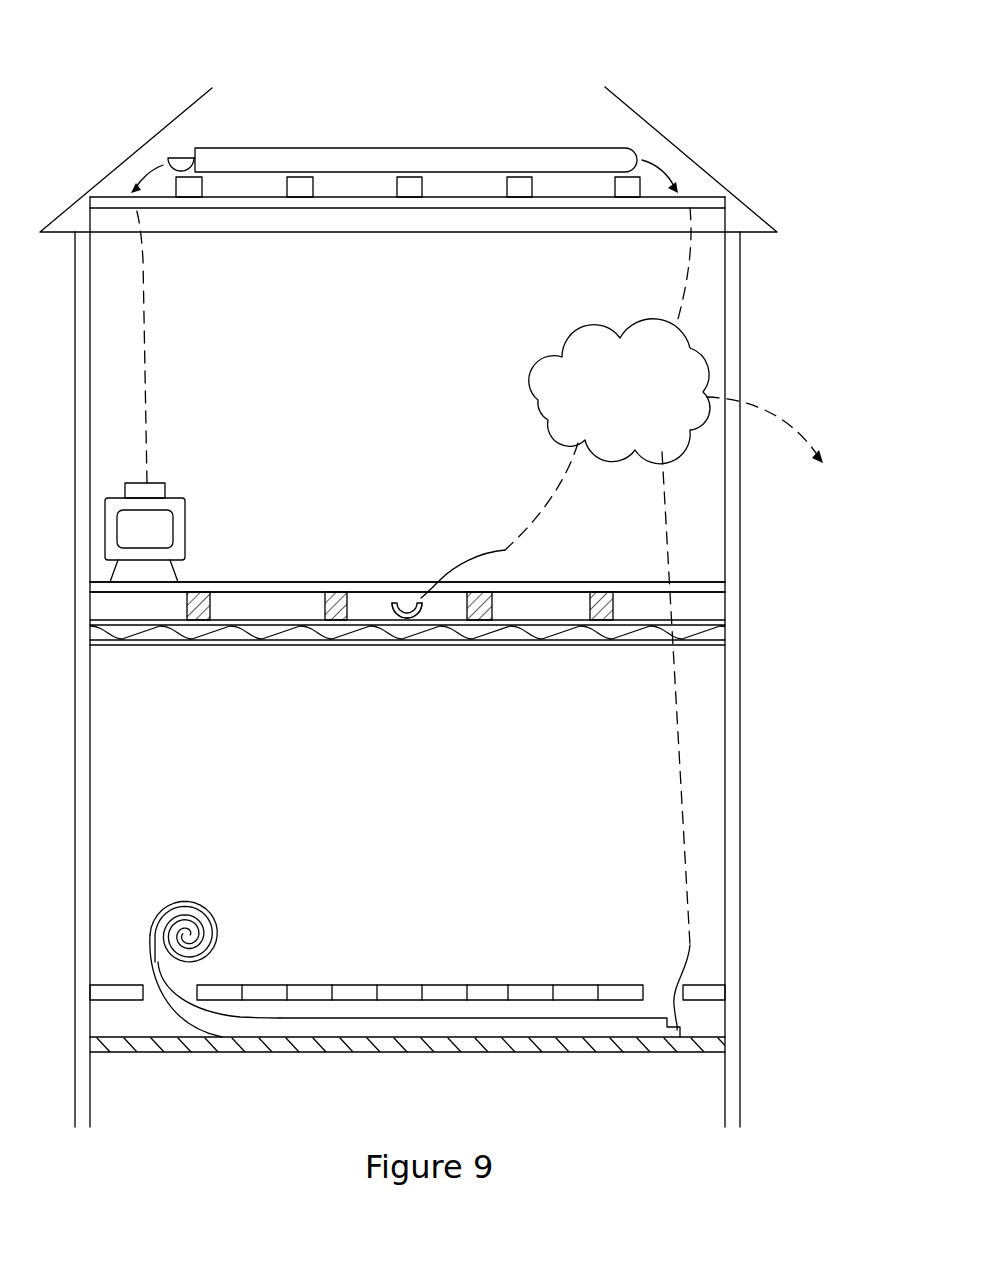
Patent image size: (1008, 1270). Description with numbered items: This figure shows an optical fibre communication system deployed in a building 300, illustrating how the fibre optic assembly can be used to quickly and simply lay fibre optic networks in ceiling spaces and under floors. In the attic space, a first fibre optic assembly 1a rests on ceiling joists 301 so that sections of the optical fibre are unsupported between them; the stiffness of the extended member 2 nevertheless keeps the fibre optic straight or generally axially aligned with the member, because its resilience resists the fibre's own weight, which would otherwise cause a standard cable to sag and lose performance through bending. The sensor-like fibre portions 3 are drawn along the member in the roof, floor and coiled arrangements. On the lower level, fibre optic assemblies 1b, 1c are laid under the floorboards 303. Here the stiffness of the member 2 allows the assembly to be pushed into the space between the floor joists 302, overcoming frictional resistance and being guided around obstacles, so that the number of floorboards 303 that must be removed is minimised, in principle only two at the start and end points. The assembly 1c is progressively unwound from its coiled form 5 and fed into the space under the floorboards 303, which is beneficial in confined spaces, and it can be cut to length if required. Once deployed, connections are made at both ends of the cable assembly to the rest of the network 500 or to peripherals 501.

The first fibre optic assembly 1a is at (546, 167).
The fibre optic assembly 1b is at (410, 620).
The fibre optic assembly 1c is at (177, 877).
The member 2 is at (262, 147).
The sensor element 3 is at (160, 168).
The coiled form 5 is at (218, 906).
The building 300 is at (742, 343).
The joists 301 is at (518, 192).
The joists 302 is at (335, 605).
The floorboards 303 is at (265, 588).
The network 500 is at (510, 576).
The peripherals 501 is at (145, 532).